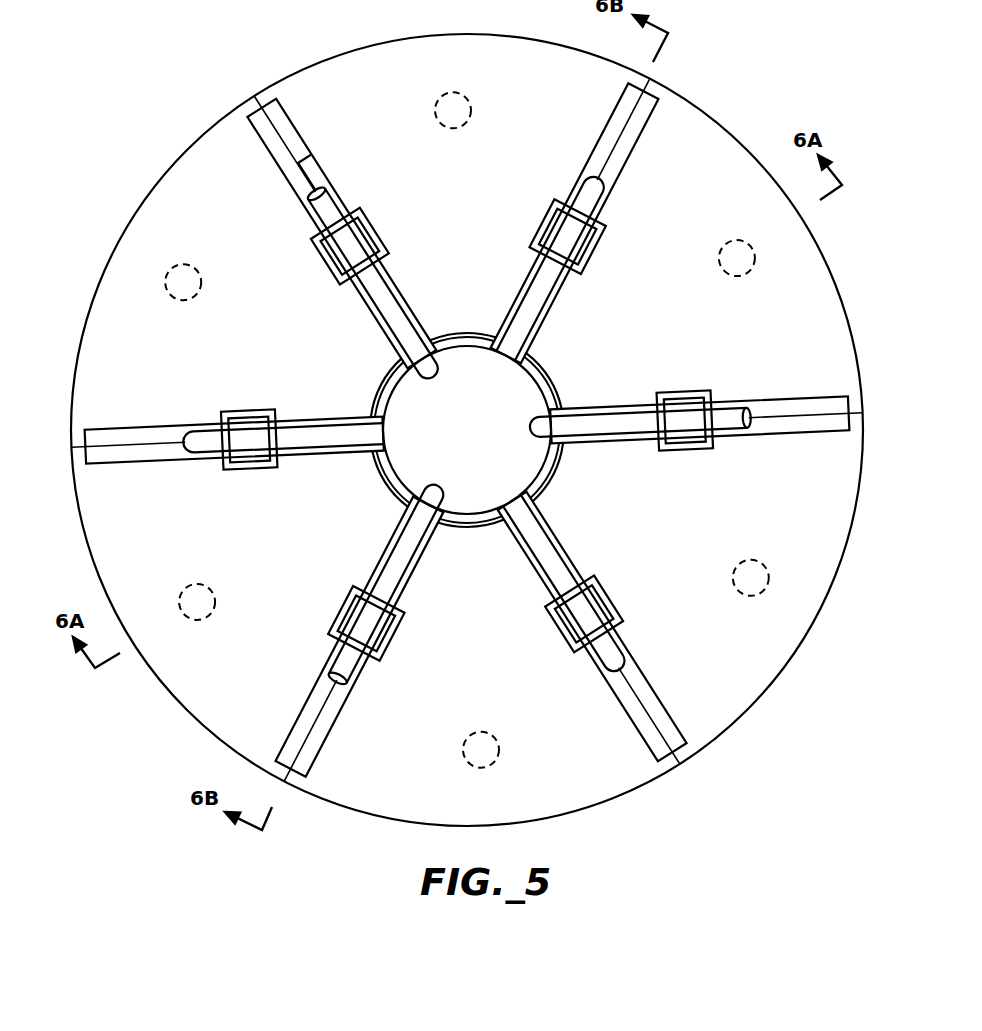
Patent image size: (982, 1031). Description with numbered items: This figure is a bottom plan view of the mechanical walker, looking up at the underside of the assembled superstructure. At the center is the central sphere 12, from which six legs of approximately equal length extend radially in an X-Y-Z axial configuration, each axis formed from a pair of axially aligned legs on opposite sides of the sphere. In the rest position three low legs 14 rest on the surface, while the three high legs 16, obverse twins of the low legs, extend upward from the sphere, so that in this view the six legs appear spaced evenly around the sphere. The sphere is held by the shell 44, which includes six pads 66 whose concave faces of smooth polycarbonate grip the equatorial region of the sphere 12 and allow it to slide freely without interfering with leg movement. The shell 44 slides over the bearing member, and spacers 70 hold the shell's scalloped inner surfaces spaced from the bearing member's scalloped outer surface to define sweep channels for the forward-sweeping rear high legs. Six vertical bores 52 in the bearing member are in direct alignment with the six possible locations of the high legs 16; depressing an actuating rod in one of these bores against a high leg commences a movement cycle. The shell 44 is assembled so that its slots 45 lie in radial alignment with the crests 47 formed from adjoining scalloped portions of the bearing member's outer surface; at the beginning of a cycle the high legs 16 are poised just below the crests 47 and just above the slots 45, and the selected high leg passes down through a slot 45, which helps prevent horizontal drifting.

The central sphere 12 is at (423, 408).
The low legs 14 is at (400, 320).
The high legs 16 is at (552, 557).
The shell 44 is at (772, 672).
The slots 45 is at (300, 121).
The crests 47 is at (302, 163).
The vertical bores 52 is at (376, 237).
The pads 66 is at (452, 342).
The spacers 70 is at (198, 267).